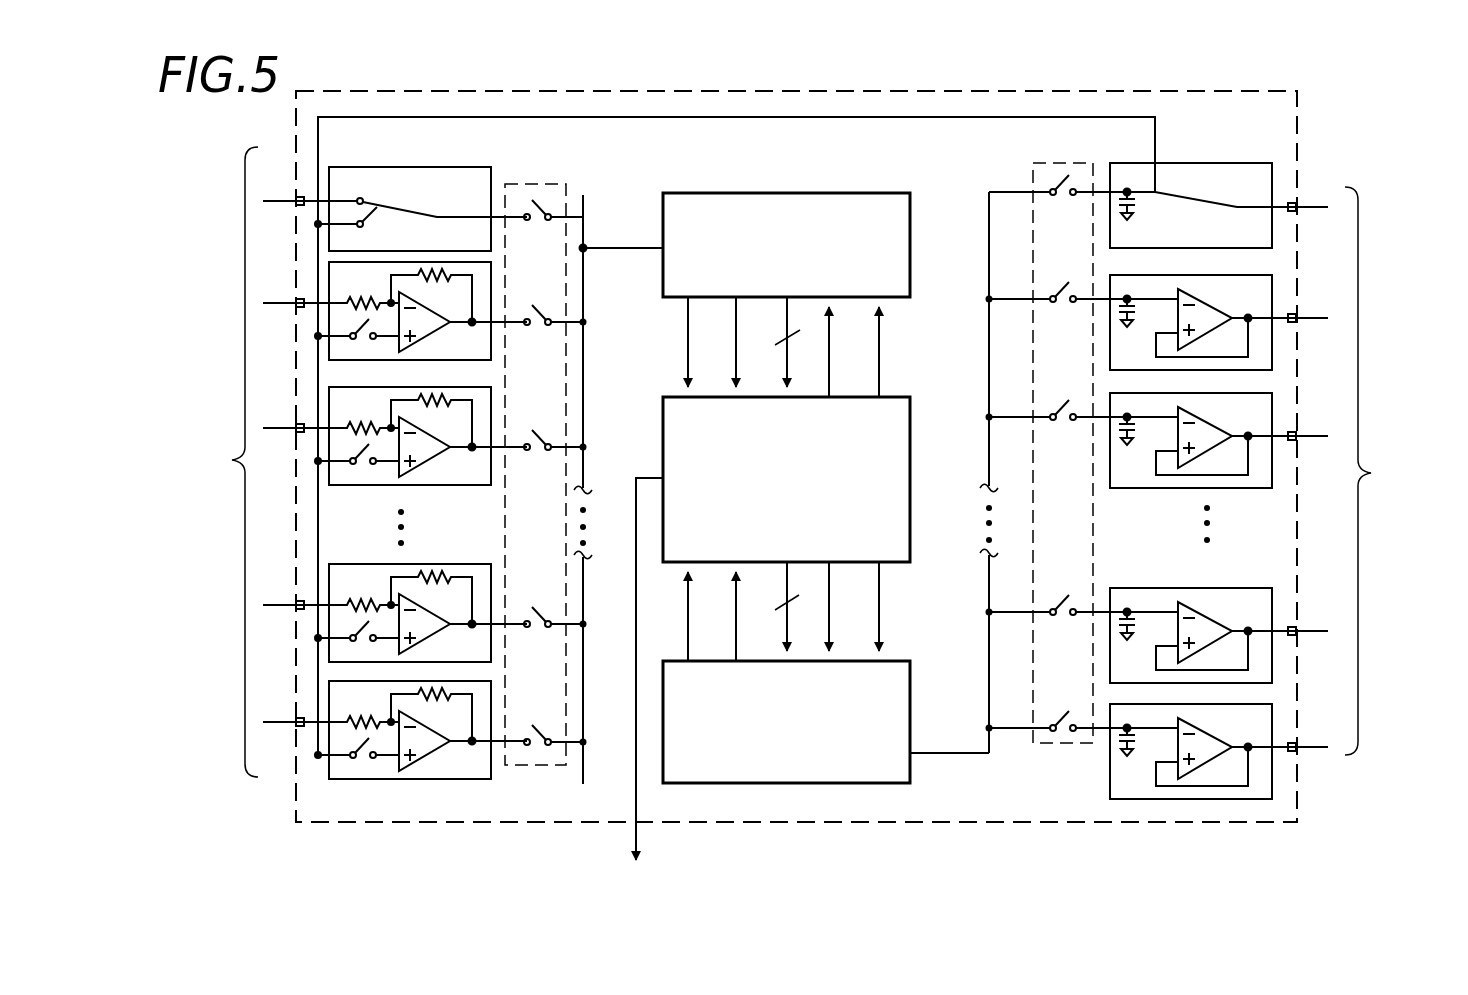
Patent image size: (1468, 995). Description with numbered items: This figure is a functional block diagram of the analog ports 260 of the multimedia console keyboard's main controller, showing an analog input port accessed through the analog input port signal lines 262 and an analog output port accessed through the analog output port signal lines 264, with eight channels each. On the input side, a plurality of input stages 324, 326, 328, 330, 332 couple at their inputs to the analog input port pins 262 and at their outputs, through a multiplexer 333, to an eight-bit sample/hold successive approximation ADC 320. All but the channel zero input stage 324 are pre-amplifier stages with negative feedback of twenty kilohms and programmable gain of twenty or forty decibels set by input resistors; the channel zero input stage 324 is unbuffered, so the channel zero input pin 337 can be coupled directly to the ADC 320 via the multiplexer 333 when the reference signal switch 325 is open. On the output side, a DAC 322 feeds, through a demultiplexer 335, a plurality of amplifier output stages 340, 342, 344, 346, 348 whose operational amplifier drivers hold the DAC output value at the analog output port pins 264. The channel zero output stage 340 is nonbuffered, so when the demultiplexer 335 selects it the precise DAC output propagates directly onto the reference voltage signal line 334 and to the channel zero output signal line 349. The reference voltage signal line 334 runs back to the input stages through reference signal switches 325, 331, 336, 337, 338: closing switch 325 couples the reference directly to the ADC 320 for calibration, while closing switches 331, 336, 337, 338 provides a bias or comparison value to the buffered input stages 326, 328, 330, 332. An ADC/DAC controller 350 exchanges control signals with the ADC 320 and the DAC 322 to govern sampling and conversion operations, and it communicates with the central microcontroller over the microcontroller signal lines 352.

The analog ports 260 is at (1195, 91).
The analog input port AIP[7:0] signal lines 262 is at (207, 509).
The analog output port AOP[7:0] signal lines 264 is at (1450, 504).
The ADC 320 is at (820, 193).
The DAC 322 is at (893, 661).
The channel 0 input stage 324 is at (400, 167).
The reference signal switch 325 is at (363, 210).
The input stage 326 is at (415, 360).
The input stage 328 is at (425, 486).
The input stage 330 is at (427, 564).
The reference signal switch 331 is at (365, 322).
The input stage 332 is at (437, 779).
The multiplexer 333 is at (542, 183).
The reference voltage signal line 334 is at (648, 117).
The demultiplexer 335 is at (1065, 162).
The reference signal switch 336 is at (368, 447).
The channel 0 input pin 337 is at (280, 197).
The reference signal switch 338 is at (362, 744).
The channel 0 output stage 340 is at (1187, 163).
The amplifier output stage 342 is at (1180, 275).
The amplifier output stage 344 is at (1170, 488).
The amplifier output stage 346 is at (1175, 588).
The amplifier output stage 348 is at (1110, 757).
The channel 0 output signal line 349 is at (1325, 207).
The ADC/DAC controller 350 is at (662, 438).
The microcontroller signal lines 352 is at (635, 838).